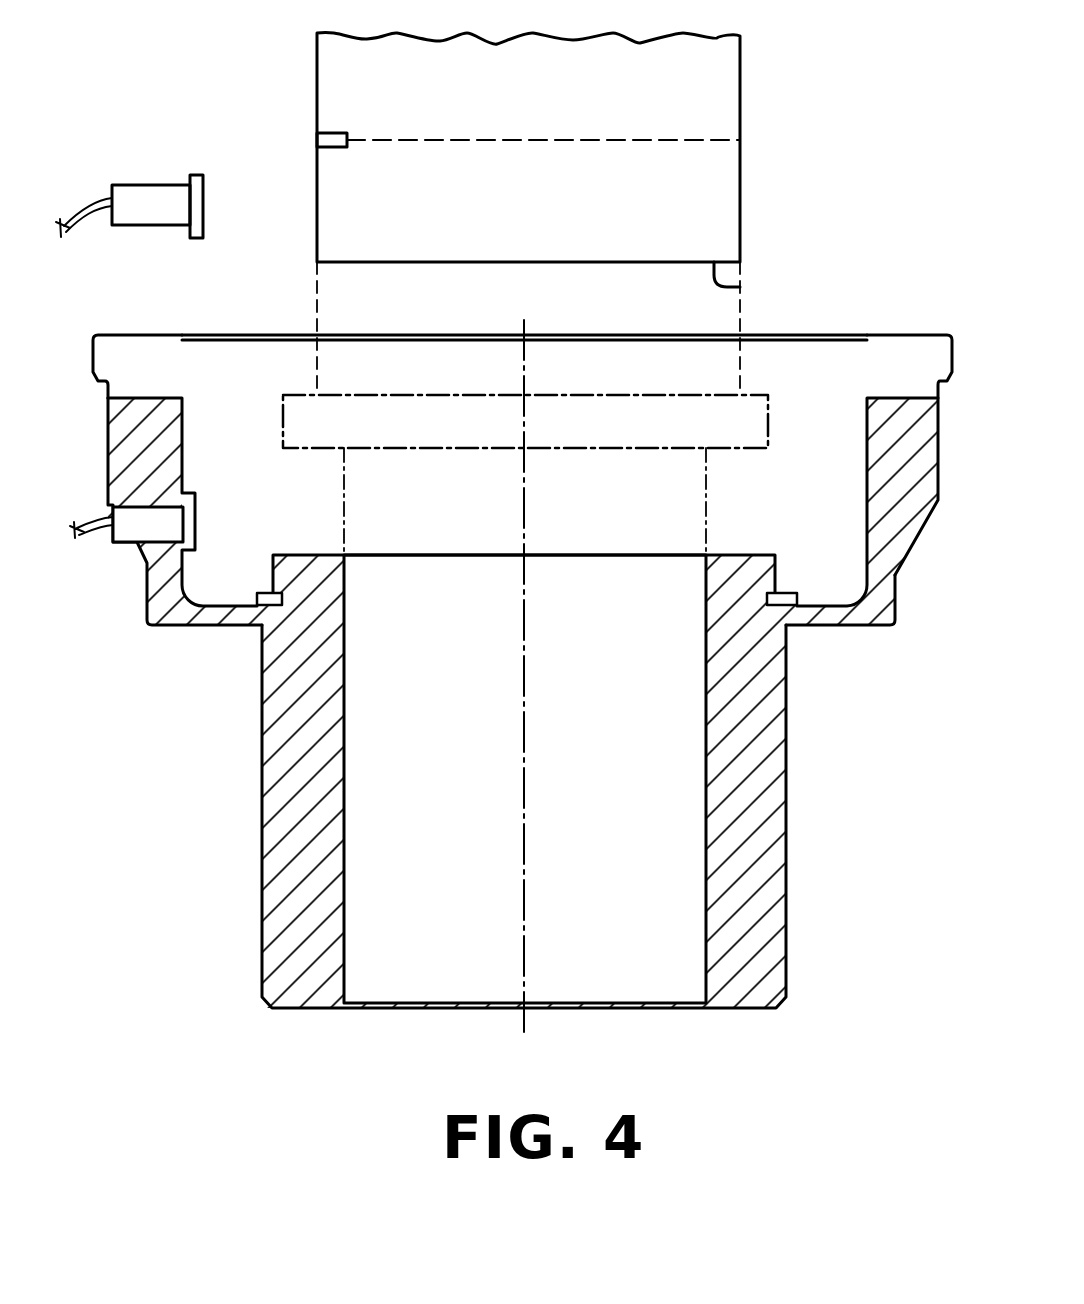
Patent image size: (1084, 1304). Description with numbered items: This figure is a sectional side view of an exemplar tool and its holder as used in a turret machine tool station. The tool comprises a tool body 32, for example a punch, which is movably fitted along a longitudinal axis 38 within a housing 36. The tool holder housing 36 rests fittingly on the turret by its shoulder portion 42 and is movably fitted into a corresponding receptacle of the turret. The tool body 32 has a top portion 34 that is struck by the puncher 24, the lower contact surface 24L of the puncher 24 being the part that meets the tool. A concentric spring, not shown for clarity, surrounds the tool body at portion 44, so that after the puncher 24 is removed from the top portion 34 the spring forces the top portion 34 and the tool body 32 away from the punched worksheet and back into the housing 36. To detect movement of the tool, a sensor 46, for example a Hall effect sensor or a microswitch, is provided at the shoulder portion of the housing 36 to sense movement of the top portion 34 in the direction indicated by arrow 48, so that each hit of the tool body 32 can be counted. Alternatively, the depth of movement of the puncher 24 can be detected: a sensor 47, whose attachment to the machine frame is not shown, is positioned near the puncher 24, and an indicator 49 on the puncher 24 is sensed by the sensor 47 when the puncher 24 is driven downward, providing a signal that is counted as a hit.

The puncher 24 is at (740, 108).
The lower contact surface 24L is at (740, 290).
The tool body 32 is at (620, 521).
The top portion 34 is at (770, 410).
The housing 36 is at (786, 822).
The axis 38 is at (524, 668).
The shoulder portion 42 is at (878, 628).
The portion 44 is at (725, 452).
The sensor 46 is at (128, 528).
The sensor 47 is at (135, 225).
The arrow 48 is at (311, 533).
The indicator 49 is at (340, 133).